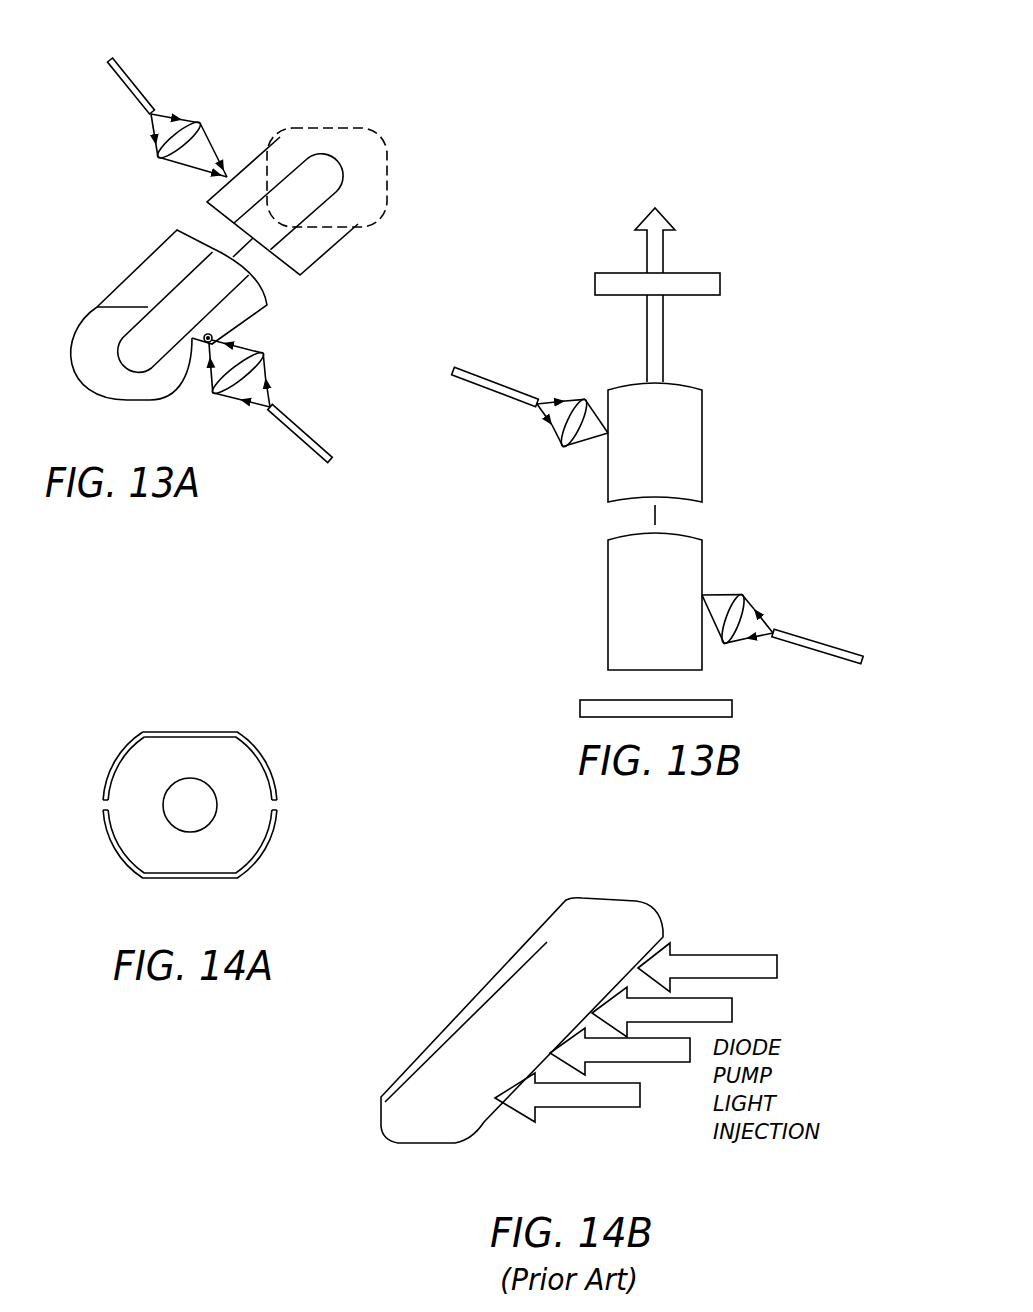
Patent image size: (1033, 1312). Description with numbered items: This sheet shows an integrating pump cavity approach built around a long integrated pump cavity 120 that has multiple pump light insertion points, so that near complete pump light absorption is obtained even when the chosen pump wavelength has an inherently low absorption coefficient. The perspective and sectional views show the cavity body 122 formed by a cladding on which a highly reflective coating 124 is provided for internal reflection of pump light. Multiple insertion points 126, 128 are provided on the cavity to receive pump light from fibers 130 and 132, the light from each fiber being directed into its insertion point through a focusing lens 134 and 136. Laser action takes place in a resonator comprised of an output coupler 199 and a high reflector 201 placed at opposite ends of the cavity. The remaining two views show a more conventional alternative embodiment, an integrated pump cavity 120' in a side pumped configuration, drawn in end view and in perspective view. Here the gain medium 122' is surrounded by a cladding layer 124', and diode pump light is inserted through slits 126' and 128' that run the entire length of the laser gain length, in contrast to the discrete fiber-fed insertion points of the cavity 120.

In FIG. 13A, the integrated pump cavity 120 is at (469, 51).
In FIG. 13B, the integrated pump cavity 120 is at (788, 328).
In FIG. 13A, the first gain medium rod 122 is at (315, 201).
In FIG. 13B, the first gain medium rod 122 is at (710, 442).
In FIG. 13B, the highly reflective coating 124 is at (747, 478).
In FIG. 13A, the insertion point 126 is at (204, 315).
In FIG. 13B, the insertion point 126 is at (696, 601).
In FIG. 13A, the insertion point 128 is at (217, 126).
In FIG. 13B, the insertion point 128 is at (573, 451).
In FIG. 13A, the fiber 130 is at (298, 437).
In FIG. 13B, the fiber 130 is at (822, 643).
In FIG. 13A, the fiber 132 is at (135, 82).
In FIG. 13B, the fiber 132 is at (493, 392).
In FIG. 13A, the focusing lens 134 is at (220, 394).
In FIG. 13B, the focusing lens 134 is at (726, 644).
In FIG. 13A, the focusing lens 136 is at (163, 160).
In FIG. 13B, the focusing lens 136 is at (562, 447).
In FIG. 13B, the output coupler 199 is at (594, 284).
In FIG. 13B, the high reflector 201 is at (577, 707).
In FIG. 14A, the integrated pump cavity 120' is at (100, 669).
In FIG. 14B, the integrated pump cavity 120' is at (579, 993).
In FIG. 14A, the gain medium slab 122' is at (177, 827).
In FIG. 14A, the cladding layer 124' is at (157, 807).
In FIG. 14A, the slit 126' is at (327, 820).
In FIG. 14B, the slit 126' is at (711, 916).
In FIG. 14A, the slit 128' is at (67, 793).
In FIG. 14B, the slit 128' is at (366, 1052).